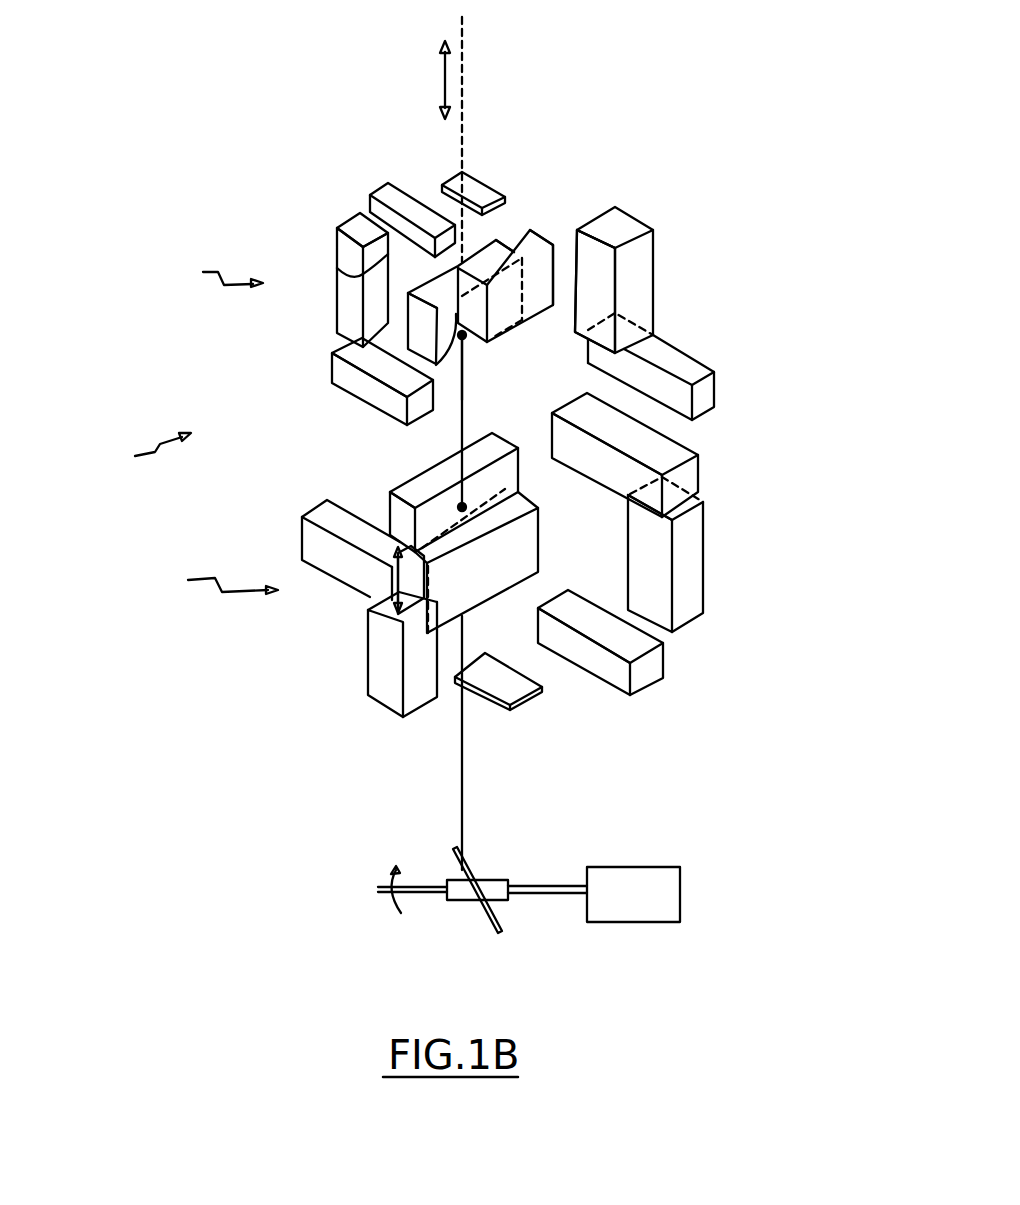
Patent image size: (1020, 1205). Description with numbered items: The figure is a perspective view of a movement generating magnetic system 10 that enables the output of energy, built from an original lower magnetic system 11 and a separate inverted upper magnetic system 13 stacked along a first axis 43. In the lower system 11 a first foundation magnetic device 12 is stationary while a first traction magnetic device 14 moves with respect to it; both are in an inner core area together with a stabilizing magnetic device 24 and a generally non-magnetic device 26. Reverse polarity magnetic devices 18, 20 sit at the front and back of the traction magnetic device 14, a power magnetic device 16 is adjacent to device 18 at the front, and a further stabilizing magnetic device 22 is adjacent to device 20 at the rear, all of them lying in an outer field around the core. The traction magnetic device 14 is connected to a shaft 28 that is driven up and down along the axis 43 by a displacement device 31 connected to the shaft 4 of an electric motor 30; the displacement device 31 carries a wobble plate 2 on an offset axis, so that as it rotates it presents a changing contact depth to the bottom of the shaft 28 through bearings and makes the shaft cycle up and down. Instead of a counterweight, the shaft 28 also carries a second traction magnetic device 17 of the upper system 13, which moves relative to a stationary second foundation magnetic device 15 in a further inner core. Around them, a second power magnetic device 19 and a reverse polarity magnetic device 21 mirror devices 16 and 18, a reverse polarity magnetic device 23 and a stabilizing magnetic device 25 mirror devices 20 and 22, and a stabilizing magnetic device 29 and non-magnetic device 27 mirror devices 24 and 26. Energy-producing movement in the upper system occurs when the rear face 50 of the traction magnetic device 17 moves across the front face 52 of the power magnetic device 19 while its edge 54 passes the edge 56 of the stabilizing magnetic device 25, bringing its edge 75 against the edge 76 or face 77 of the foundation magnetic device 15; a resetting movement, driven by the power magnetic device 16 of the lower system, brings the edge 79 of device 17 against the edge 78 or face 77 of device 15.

The wobble plate 2 is at (449, 880).
The shaft of electric motor 4 is at (482, 872).
The magnetic system 10 is at (147, 451).
The original magnetic system 11 is at (220, 581).
The first foundation magnetic device 12 is at (444, 492).
The inverted magnetic system 13 is at (217, 275).
The first traction magnetic device 14 is at (476, 561).
The second foundation magnetic device 15 is at (505, 294).
The power magnetic device 16 is at (372, 654).
The second traction magnetic device 17 is at (486, 421).
The reverse polarity magnetic device 18 is at (335, 566).
The second power magnetic device 19 is at (640, 280).
The reverse polarity magnetic device 20 is at (655, 455).
The reverse polarity magnetic device 21 is at (679, 366).
The stabilizing magnetic device 22 is at (696, 554).
The reverse polarity magnetic device 23 is at (352, 381).
The stabilizing magnetic device 24 is at (625, 651).
The stabilizing magnetic device 25 is at (329, 280).
The non-magnetic device 26 is at (499, 703).
The non-magnetic device 27 is at (452, 174).
The shaft 28 is at (433, 602).
The stabilizing magnetic device 29 is at (387, 209).
The electric motor 30 is at (633, 894).
The displacement device 31 is at (460, 913).
The first axis 43 is at (425, 139).
The rear face 50 is at (562, 251).
The front face 52 is at (595, 291).
The edge 54 is at (458, 302).
The edge 56 is at (329, 247).
The edge 75 is at (535, 323).
The edge 76 is at (561, 195).
The face 77 is at (514, 206).
The edge 78 is at (481, 375).
The edge 79 is at (439, 382).